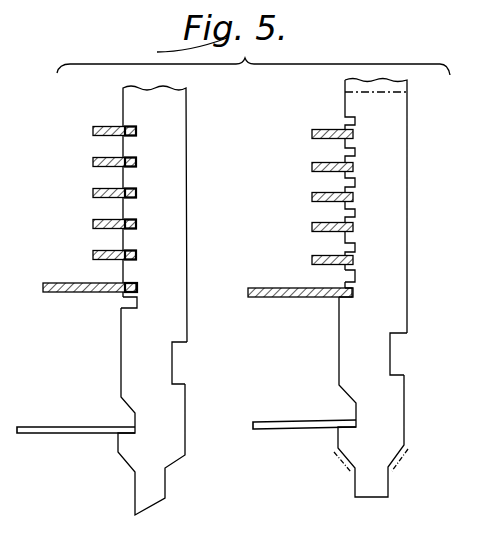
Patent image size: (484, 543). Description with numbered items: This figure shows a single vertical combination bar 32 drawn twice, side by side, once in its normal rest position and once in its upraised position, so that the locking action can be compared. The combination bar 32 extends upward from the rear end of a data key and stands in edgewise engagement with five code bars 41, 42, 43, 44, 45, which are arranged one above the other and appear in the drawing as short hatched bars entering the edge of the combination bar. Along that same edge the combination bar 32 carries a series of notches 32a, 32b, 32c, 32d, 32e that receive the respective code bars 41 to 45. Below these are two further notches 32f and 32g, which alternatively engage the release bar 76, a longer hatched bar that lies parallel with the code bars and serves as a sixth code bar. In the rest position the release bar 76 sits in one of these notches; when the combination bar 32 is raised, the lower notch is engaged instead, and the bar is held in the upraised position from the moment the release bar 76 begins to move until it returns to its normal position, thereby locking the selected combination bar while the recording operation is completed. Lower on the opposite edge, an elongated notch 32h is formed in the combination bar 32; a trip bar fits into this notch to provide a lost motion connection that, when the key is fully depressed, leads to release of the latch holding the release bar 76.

The combination bar 32 is at (177, 318).
The notch 32a is at (137, 138).
The notch 32b is at (137, 170).
The notch 32c is at (137, 201).
The notch 32d is at (137, 232).
The notch 32e is at (137, 258).
The notch 32f is at (137, 286).
The notch 32g is at (137, 303).
The elongated notch 32h is at (180, 354).
The code bar 41 is at (93, 128).
The code bar 42 is at (93, 162).
The code bar 43 is at (93, 193).
The code bar 44 is at (93, 224).
The code bar 45 is at (308, 259).
The release bar 76 is at (46, 294).